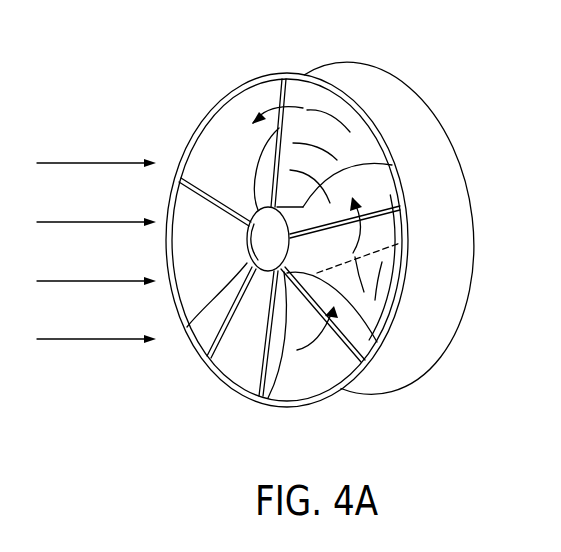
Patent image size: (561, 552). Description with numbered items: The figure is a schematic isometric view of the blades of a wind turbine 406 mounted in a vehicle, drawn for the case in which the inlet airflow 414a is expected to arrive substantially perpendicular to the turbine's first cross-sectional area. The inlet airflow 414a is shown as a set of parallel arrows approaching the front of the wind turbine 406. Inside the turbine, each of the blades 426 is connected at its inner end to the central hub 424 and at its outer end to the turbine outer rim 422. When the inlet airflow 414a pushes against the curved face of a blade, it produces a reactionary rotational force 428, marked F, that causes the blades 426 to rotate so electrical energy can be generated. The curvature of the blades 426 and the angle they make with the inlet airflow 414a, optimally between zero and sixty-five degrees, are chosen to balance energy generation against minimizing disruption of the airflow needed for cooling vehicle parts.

The wind turbine 406 is at (460, 101).
The inlet airflow 414a is at (98, 163).
The turbine outer rim 422 is at (402, 263).
The central hub 424 is at (187, 327).
The blades 426 is at (370, 207).
The reactionary rotational force 428 is at (263, 106).